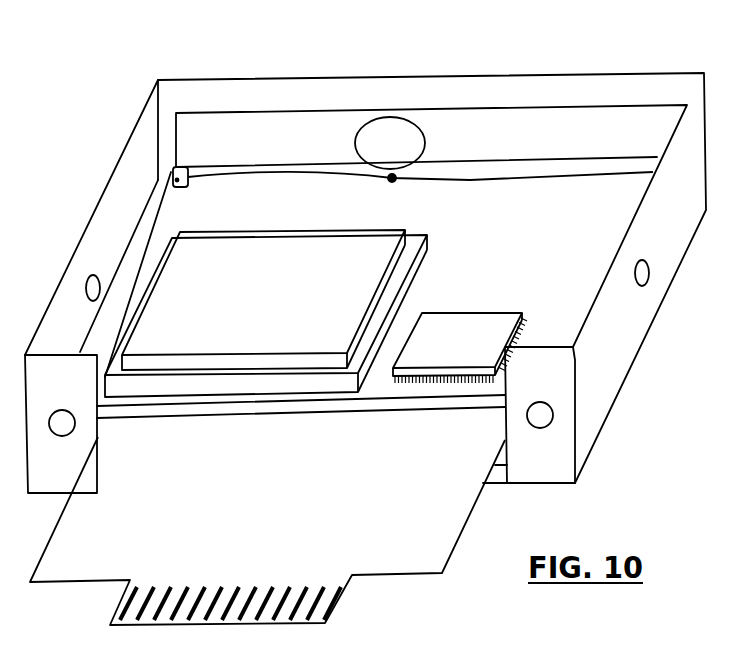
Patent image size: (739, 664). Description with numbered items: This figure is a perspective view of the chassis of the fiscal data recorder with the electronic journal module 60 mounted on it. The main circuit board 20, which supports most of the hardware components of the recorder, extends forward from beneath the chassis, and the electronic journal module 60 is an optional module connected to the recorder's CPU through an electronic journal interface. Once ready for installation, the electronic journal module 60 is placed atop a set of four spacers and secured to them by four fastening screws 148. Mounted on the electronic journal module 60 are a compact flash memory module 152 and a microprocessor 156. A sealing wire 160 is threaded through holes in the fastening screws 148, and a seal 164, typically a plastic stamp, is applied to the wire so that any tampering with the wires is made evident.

The main circuit board 20 is at (267, 531).
The electronic journal module 60 is at (365, 283).
The fastening screw 148 is at (172, 168).
The compact flash memory module 152 is at (266, 313).
The microprocessor 156 is at (460, 348).
The sealing wire 160 is at (468, 180).
The seal 164 is at (372, 118).